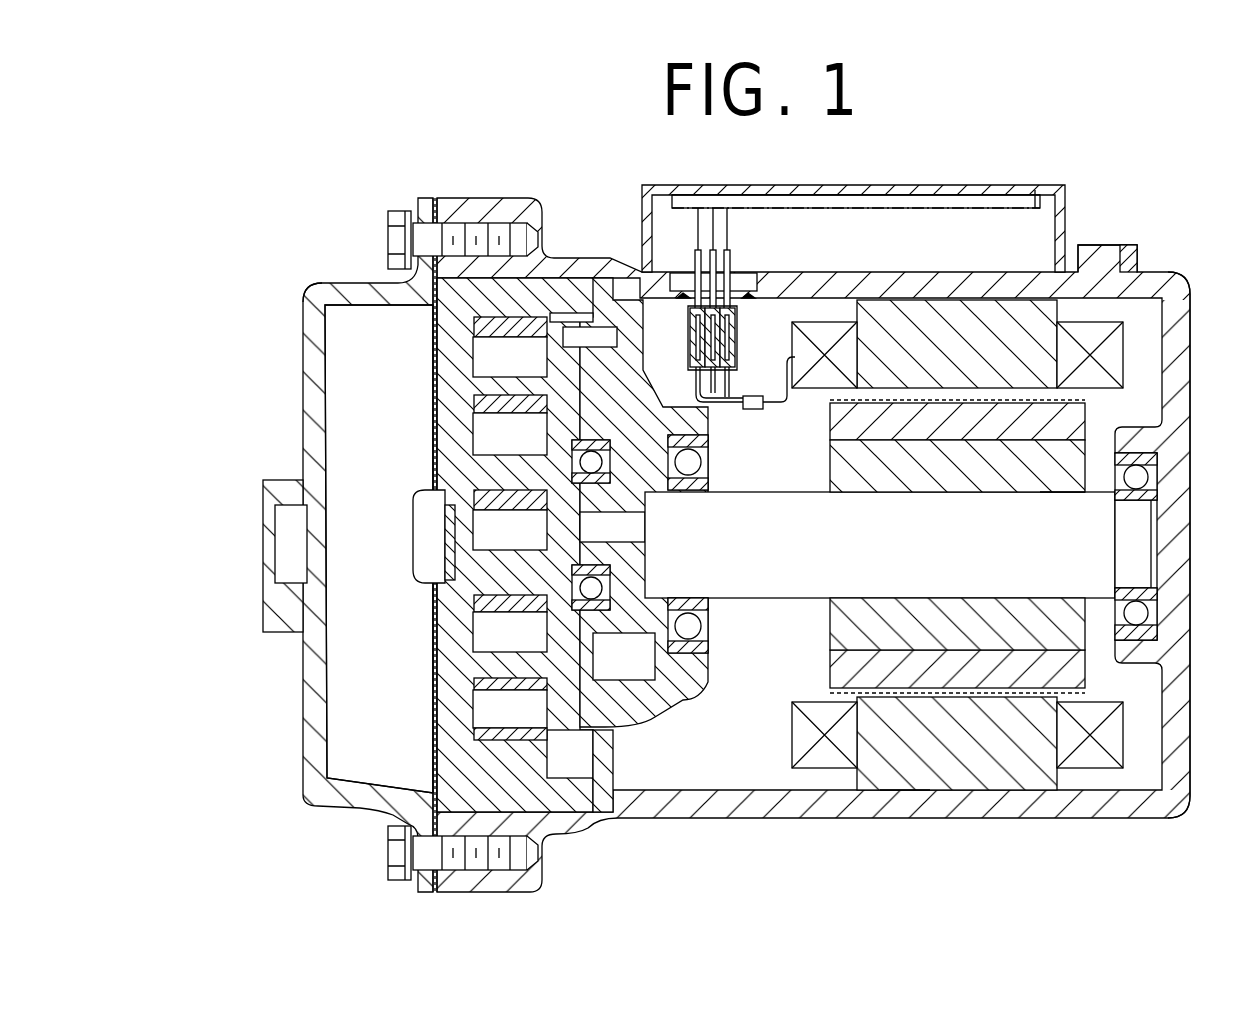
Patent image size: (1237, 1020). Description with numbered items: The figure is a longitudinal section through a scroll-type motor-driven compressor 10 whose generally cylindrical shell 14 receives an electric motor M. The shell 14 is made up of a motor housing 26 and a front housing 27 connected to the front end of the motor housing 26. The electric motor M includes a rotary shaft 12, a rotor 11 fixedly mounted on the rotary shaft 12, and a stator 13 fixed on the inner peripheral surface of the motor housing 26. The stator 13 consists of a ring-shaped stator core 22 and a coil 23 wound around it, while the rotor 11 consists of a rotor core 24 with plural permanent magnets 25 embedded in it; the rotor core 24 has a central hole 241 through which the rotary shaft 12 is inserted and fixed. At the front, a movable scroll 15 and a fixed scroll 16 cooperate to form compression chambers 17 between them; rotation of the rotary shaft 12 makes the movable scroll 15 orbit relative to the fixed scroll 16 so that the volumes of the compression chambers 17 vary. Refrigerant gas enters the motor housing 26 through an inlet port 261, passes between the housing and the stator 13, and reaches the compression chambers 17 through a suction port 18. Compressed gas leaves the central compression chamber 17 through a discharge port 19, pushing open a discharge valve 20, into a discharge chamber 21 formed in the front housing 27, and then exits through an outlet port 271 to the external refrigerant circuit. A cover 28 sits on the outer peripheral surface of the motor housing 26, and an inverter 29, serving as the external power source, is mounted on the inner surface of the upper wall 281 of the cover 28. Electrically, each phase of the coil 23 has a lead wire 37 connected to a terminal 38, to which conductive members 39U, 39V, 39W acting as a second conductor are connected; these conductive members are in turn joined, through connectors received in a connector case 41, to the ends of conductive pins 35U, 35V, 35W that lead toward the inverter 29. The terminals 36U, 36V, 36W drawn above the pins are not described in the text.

The motor-driven compressor 10 is at (338, 210).
The rotor 11 is at (915, 546).
The rotary shaft 12 is at (806, 492).
The stator 13 is at (940, 595).
The shell 14 is at (674, 866).
The movable scroll 15 is at (595, 648).
The fixed scroll 16 is at (435, 385).
The compression chambers 17 is at (523, 723).
The suction port 18 is at (613, 762).
The discharge port 19 is at (455, 558).
The discharge valve 20 is at (452, 532).
The discharge chamber 21 is at (364, 692).
The stator core 22 is at (1034, 790).
The coil 23 is at (1090, 770).
The rotor core 24 is at (934, 545).
The permanent magnets 25 is at (833, 668).
The motor housing 26 is at (803, 812).
The front housing 27 is at (345, 300).
The cover 28 is at (642, 210).
The inverter 29 is at (878, 210).
The conductive pin 35U is at (694, 270).
The conductive pin 35V is at (717, 258).
The conductive pin 35W is at (731, 266).
The U-phase terminal 36U is at (696, 258).
The V-phase terminal 36V is at (715, 218).
The W-phase terminal 36W is at (730, 232).
The lead wire 37 is at (775, 380).
The terminal 38 is at (750, 406).
The conductive member 39U is at (696, 383).
The conductive member 39V is at (712, 395).
The conductive member 39W is at (727, 395).
The connector case 41 is at (737, 336).
The central hole 241 is at (1040, 495).
The inlet port 261 is at (1114, 250).
The outlet port 271 is at (282, 585).
The upper wall 281 is at (922, 193).
The electric motor M is at (911, 807).